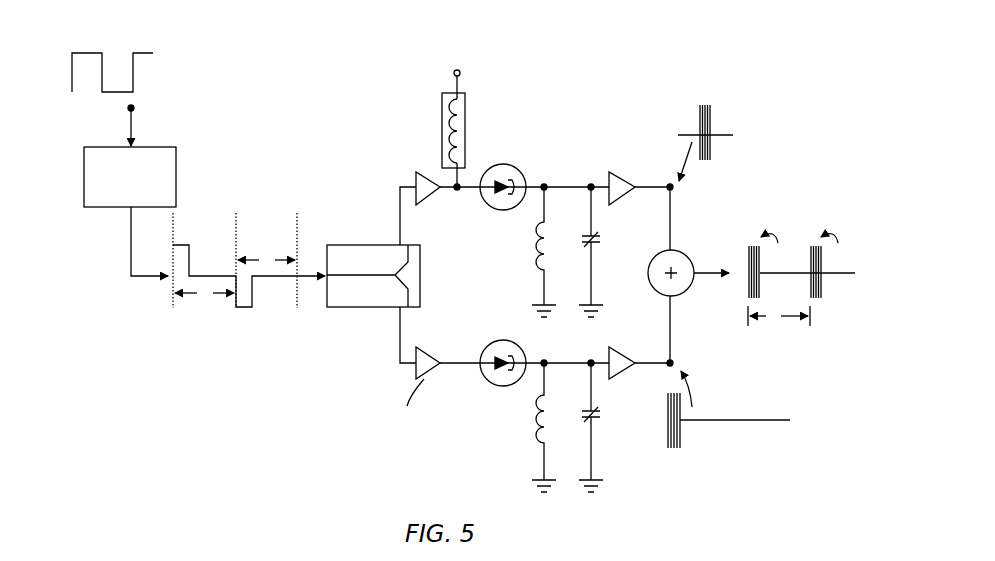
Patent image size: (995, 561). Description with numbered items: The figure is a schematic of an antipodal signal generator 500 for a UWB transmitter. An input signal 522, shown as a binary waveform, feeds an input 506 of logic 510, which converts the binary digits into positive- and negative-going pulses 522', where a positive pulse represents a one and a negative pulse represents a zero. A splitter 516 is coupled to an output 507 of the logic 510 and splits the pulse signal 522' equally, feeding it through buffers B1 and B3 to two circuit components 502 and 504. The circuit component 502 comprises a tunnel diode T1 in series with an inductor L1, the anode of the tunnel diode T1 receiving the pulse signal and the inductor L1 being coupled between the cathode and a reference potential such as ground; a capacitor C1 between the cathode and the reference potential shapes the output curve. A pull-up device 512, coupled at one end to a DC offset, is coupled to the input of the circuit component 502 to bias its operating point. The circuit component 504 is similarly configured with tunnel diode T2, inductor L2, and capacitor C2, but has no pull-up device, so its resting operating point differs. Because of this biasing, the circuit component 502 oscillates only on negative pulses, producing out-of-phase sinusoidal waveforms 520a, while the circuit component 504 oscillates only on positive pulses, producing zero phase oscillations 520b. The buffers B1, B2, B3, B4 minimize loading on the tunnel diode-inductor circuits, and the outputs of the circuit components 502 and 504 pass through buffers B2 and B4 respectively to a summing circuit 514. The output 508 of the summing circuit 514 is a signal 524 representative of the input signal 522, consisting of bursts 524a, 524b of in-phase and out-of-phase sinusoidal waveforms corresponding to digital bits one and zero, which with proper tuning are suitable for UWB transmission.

The antipodal signal generator 500 is at (806, 42).
The circuit component 502 is at (608, 107).
The circuit component 504 is at (455, 445).
The input 506 is at (131, 128).
The output 507 is at (129, 260).
The output 508 is at (698, 277).
The logic 510 is at (84, 175).
The pull-up device 512 is at (442, 118).
The summing circuit 514 is at (689, 254).
The splitter 516 is at (348, 309).
The out-of-phase sinusoidal waveforms 520a is at (713, 125).
The zero phase oscillations 520b is at (682, 436).
The input signal 522 is at (150, 69).
The positive- and negative-going pulses 522' is at (246, 290).
The signal 524 is at (815, 269).
The burst 524a is at (762, 288).
The burst 524b is at (820, 288).
The buffer B1 is at (416, 180).
The buffer B2 is at (620, 172).
The buffer B3 is at (416, 370).
The buffer B4 is at (621, 347).
The tunnel diode T1 is at (503, 211).
The tunnel diode T2 is at (503, 340).
The inductor L1 is at (544, 250).
The inductor L2 is at (544, 425).
The capacitor C1 is at (599, 238).
The capacitor C2 is at (599, 414).